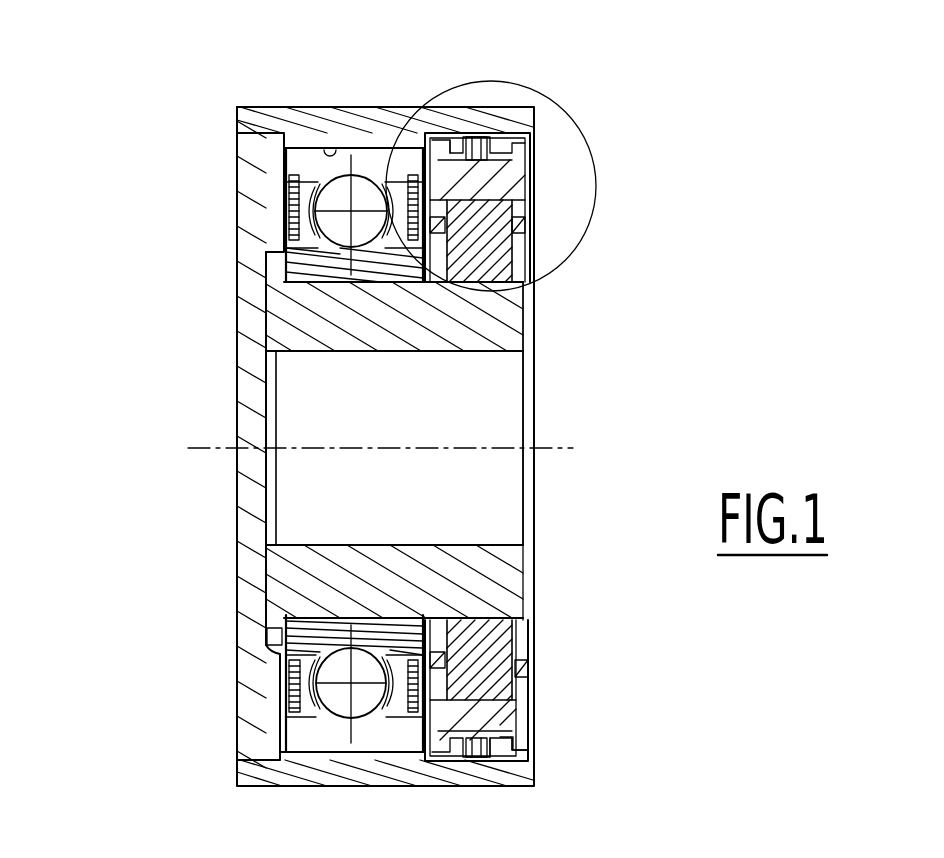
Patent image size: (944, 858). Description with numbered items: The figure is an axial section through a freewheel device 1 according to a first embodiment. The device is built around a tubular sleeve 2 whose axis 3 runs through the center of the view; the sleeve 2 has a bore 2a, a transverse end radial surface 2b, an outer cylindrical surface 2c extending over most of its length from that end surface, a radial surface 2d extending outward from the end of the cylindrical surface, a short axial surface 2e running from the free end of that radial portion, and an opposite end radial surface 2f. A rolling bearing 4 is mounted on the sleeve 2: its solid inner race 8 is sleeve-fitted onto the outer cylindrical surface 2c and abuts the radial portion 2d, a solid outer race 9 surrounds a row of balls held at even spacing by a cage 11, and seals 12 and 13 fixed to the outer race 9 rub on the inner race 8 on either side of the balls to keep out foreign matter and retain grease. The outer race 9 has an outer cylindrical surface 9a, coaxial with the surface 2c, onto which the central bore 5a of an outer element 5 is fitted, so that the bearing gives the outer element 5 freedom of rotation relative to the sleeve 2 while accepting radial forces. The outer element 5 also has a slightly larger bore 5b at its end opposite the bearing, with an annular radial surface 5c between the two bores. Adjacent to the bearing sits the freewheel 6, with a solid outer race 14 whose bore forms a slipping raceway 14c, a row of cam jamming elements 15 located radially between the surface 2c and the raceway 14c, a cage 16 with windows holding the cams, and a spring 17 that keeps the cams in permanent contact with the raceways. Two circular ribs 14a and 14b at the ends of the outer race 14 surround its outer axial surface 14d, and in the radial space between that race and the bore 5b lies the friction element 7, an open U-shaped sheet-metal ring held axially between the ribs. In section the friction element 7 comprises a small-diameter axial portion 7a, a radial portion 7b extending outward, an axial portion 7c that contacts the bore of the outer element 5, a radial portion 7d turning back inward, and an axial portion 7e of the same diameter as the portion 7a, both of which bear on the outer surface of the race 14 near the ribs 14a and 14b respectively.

The freewheel device 1 is at (206, 211).
The tubular sleeve 2 is at (300, 310).
The bore 2a is at (480, 460).
The transverse radial surface 2b is at (536, 313).
The outer cylindrical surface 2c is at (538, 268).
The radial surface 2d is at (273, 296).
The short axial surface 2e is at (270, 660).
The end radial surface 2f is at (267, 580).
The axis 3 is at (215, 447).
The rolling bearing 4 is at (284, 185).
The outer element 5 is at (290, 148).
The central bore 5a is at (326, 148).
The bore 5b is at (455, 140).
The annular radial surface 5c is at (437, 133).
The freewheel 6 is at (539, 252).
The friction element 7 is at (522, 125).
The small diameter axial portion 7a is at (462, 757).
The radial portion 7b is at (480, 757).
The axial portion 7c is at (512, 778).
The radial portion 7d is at (533, 767).
The axial portion 7e is at (530, 687).
The inner race 8 is at (270, 625).
The outer race 9 is at (285, 735).
The outer cylindrical surface 9a is at (333, 768).
The cage 11 is at (283, 672).
The seal 12 is at (283, 695).
The seal 13 is at (385, 765).
The outer race 14 is at (512, 180).
The circular rib 14a is at (450, 757).
The circular rib 14b is at (533, 728).
The slipping raceway 14c is at (520, 210).
The outer axial surface 14d is at (488, 137).
The jamming elements 15 is at (505, 283).
The cage 16 is at (520, 226).
The spring 17 is at (450, 284).